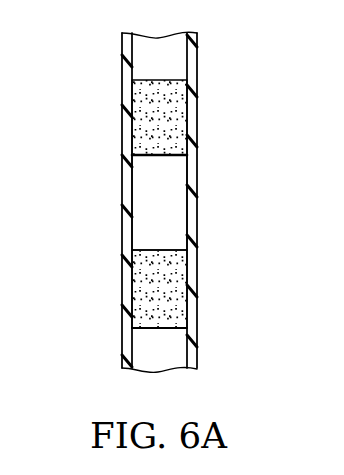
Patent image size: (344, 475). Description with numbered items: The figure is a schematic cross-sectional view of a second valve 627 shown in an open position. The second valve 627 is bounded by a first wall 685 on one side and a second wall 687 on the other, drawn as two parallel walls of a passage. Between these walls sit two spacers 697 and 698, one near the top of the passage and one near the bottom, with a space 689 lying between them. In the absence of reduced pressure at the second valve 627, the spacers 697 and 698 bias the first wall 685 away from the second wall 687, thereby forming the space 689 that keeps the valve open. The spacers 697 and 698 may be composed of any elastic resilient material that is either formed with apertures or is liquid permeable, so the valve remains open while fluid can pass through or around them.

The second valve 627 is at (79, 86).
The first wall 685 is at (130, 177).
The second wall 687 is at (195, 163).
The space 689 is at (168, 208).
The spacer 697 is at (146, 293).
The spacer 698 is at (170, 110).